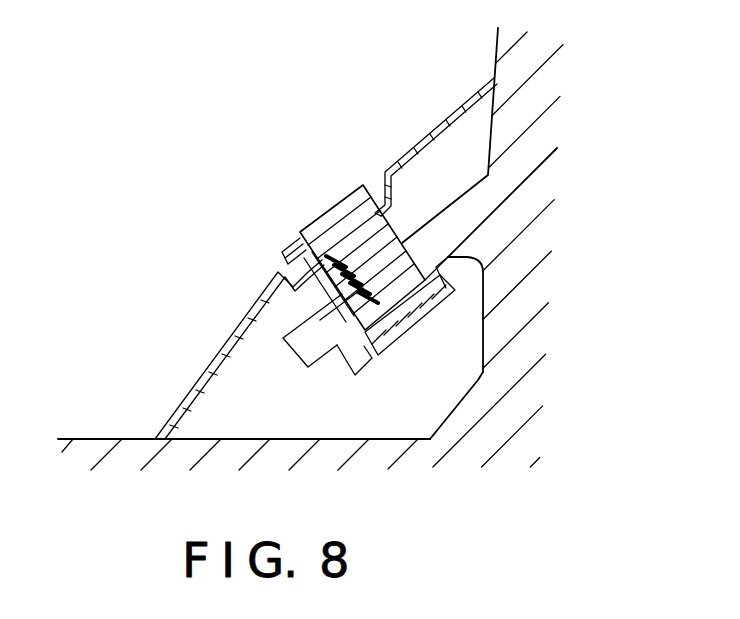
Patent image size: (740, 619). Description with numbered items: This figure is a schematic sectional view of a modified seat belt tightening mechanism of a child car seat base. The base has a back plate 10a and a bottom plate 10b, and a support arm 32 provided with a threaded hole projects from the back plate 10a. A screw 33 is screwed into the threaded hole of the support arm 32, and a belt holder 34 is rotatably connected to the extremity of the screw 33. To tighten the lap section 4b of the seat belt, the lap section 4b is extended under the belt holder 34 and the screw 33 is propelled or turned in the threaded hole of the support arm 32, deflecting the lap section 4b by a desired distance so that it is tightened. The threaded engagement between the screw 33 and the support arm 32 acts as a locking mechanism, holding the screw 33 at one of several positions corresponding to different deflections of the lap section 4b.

The back plate 10a is at (497, 45).
The bottom plate 10b is at (107, 438).
The support arm 32 is at (450, 200).
The screw 33 is at (330, 212).
The belt holder 34 is at (340, 360).
The lap section 4b is at (412, 325).